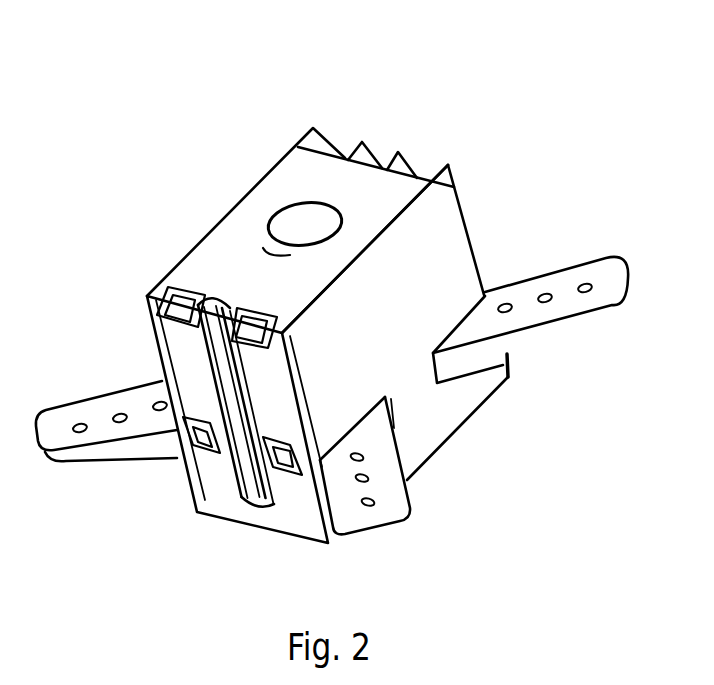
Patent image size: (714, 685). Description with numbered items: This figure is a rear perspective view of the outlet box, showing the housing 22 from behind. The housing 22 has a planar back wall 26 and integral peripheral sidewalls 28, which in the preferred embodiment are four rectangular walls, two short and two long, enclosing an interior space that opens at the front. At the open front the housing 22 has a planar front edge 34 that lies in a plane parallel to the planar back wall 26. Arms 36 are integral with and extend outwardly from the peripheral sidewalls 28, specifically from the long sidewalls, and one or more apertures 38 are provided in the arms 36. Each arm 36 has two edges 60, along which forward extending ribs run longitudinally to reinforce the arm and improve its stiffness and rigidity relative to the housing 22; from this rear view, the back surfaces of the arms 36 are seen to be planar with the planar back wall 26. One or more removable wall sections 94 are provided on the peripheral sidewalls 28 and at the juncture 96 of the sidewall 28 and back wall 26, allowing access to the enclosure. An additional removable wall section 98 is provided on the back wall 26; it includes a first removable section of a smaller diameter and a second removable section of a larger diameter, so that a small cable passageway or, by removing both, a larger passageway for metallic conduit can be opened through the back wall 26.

The housing 22 is at (486, 119).
The planar back wall 26 is at (320, 189).
The peripheral sidewalls 28 is at (432, 276).
The planar front edge 34 is at (462, 432).
The arms 36 is at (73, 439).
The apertures 38 is at (549, 302).
The edges 60 is at (403, 447).
The removable wall sections 94 is at (180, 306).
The juncture 96 is at (146, 291).
The additional removable wall section 98 is at (323, 237).